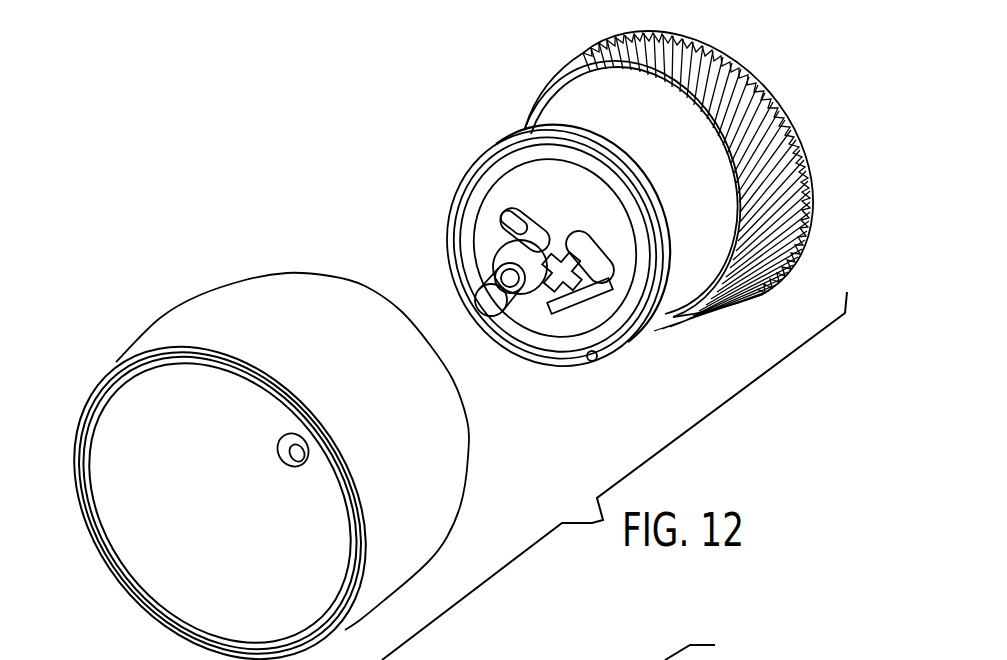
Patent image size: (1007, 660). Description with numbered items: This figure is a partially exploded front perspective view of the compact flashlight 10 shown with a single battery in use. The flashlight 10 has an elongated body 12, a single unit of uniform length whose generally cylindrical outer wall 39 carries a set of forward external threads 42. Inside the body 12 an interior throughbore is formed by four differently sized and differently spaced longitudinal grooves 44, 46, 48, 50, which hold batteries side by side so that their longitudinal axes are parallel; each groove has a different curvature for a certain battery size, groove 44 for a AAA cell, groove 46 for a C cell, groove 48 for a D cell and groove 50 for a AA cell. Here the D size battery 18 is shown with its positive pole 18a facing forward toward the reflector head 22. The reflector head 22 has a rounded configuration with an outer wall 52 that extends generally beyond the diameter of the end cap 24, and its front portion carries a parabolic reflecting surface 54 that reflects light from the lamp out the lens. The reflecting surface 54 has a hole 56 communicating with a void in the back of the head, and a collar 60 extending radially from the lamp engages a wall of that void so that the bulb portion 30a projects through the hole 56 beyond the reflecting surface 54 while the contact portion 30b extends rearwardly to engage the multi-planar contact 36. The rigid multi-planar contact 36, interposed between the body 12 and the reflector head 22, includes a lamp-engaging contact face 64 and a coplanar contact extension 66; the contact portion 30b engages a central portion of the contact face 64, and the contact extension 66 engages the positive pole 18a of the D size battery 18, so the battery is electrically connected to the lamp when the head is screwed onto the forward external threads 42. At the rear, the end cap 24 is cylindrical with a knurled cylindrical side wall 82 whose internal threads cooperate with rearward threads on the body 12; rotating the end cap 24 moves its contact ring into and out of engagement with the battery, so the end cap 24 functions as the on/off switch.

The compact flashlight 10 is at (358, 148).
The elongated body 12 is at (690, 272).
The D size battery 18 is at (490, 190).
The positive pole of D size battery 18a is at (522, 205).
The reflector head 22 is at (305, 278).
The end cap 24 is at (798, 120).
The bulb portion 30a is at (488, 308).
The contact portion 30b is at (495, 268).
The multi-planar contact 36 is at (568, 332).
The cylindrical outer wall 39 is at (577, 110).
The forward external threads 42 is at (500, 143).
The groove 44 is at (613, 243).
The groove 46 is at (594, 362).
The groove 48 is at (477, 227).
The groove 50 is at (515, 330).
The outer wall 52 is at (243, 325).
The parabolic reflecting surface 54 is at (160, 560).
The hole 56 is at (300, 472).
The collar 60 is at (493, 275).
The lamp-engaging contact face 64 is at (600, 228).
The contact extension 66 is at (513, 227).
The knurled cylindrical side wall 82 is at (730, 77).